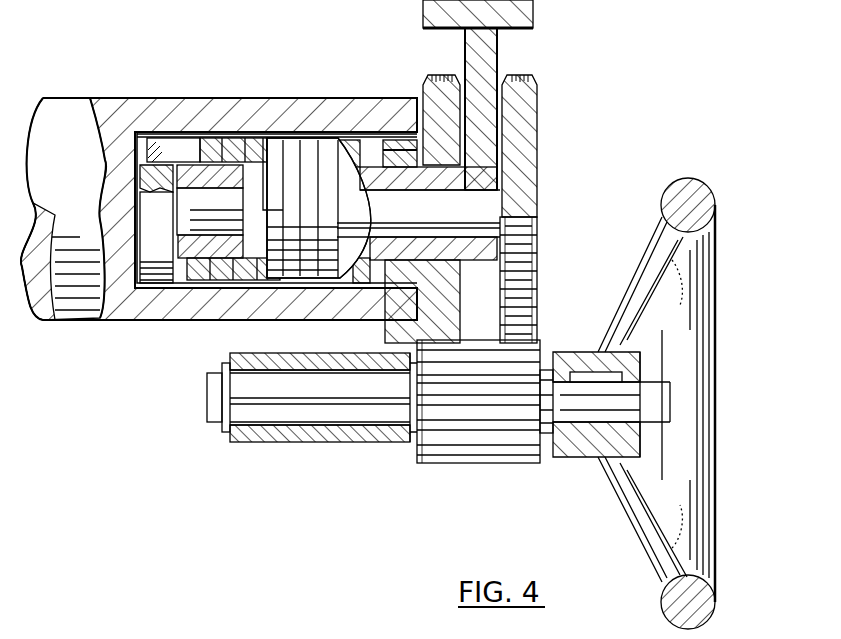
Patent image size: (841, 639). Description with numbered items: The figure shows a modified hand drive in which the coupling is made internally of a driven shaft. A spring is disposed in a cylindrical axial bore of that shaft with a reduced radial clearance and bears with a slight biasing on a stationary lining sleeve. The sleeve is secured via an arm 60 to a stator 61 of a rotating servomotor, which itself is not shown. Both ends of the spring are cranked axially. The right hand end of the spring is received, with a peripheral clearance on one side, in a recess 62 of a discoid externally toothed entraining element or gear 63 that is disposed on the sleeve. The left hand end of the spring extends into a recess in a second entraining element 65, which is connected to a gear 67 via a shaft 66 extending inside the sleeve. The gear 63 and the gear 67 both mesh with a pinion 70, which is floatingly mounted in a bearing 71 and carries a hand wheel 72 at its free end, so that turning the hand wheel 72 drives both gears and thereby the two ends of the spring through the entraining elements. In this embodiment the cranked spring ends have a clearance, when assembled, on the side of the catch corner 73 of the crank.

The arm 60 is at (488, 50).
The stator 61 is at (526, 14).
The recess 62 is at (412, 140).
The externally toothed entraining element 63 is at (448, 100).
The second entraining element 65 is at (152, 222).
The shaft 66 is at (508, 200).
The gear 67 is at (526, 264).
The pinion 70 is at (494, 463).
The bearing 71 is at (333, 440).
The hand wheel 72 is at (674, 190).
The catch corner 73 is at (380, 140).